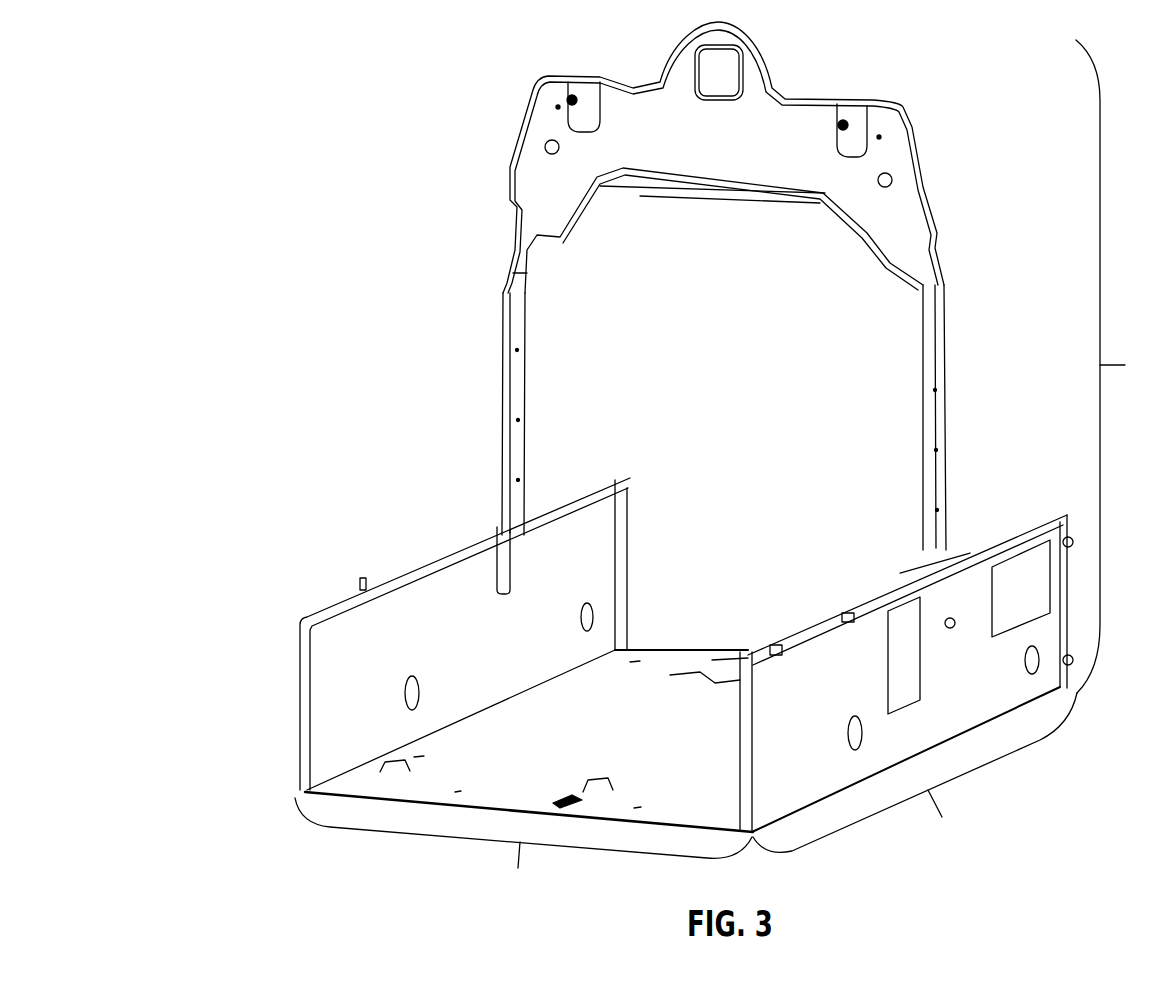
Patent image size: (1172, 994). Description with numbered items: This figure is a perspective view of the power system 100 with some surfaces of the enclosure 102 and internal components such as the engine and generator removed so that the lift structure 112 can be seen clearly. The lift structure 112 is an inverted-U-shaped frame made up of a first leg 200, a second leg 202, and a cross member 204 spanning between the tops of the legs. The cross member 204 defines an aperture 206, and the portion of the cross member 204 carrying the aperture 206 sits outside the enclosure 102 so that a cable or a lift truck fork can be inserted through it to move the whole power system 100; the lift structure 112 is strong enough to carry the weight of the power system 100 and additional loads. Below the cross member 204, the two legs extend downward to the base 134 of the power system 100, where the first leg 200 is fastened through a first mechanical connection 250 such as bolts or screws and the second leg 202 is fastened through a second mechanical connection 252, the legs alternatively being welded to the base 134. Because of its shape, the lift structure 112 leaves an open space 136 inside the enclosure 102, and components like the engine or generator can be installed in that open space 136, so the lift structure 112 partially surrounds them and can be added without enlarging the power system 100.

The power system 100 is at (236, 36).
The enclosure 102 is at (309, 589).
The lift structure 112 is at (650, 68).
The base 134 is at (805, 670).
The open space 136 is at (727, 355).
The first leg 200 is at (935, 350).
The second leg 202 is at (517, 313).
The cross member 204 is at (787, 142).
The aperture 206 is at (723, 78).
The first mechanical connection 250 is at (952, 618).
The second mechanical connection 252 is at (510, 580).